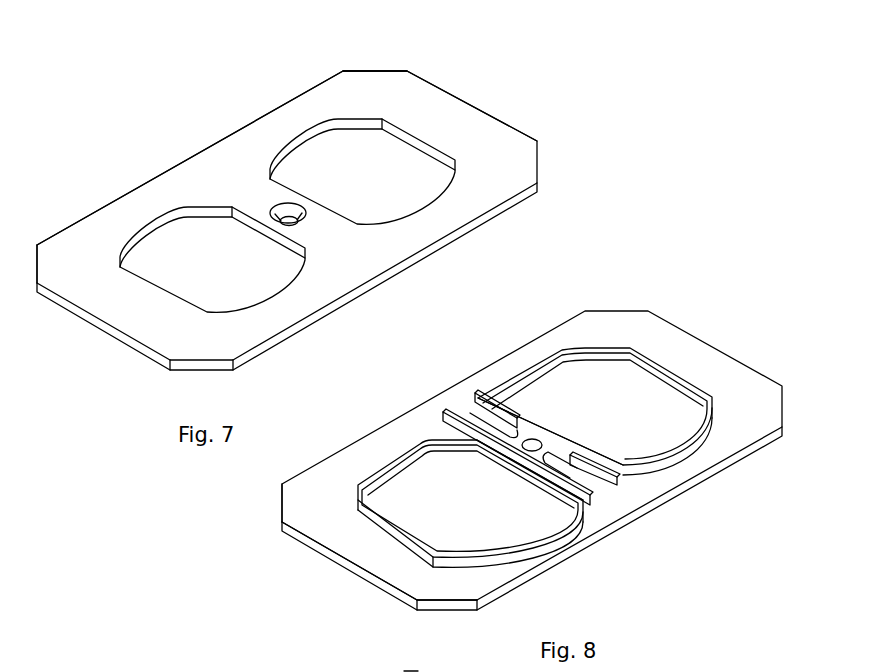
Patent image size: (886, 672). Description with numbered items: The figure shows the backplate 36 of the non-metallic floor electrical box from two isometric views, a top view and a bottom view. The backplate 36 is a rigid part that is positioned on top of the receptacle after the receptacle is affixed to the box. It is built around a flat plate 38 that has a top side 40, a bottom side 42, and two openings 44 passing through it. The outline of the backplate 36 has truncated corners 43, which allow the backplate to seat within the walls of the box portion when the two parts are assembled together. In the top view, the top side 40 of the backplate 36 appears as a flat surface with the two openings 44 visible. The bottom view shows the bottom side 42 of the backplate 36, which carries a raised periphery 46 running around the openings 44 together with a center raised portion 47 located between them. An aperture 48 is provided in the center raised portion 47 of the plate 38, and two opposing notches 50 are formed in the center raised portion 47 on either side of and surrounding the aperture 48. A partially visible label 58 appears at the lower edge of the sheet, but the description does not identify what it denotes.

In FIG. 7, the backplate 36 is at (143, 136).
In FIG. 8, the backplate 36 is at (690, 296).
In FIG. 7, the flat plate 38 is at (472, 105).
In FIG. 8, the flat plate 38 is at (718, 348).
In FIG. 7, the top side 40 is at (358, 261).
In FIG. 8, the bottom side 42 is at (468, 587).
In FIG. 7, the truncated corners 43 is at (374, 70).
In FIG. 8, the truncated corners 43 is at (281, 507).
In FIG. 7, the openings 44 is at (227, 273).
In FIG. 8, the openings 44 is at (627, 426).
In FIG. 8, the raised periphery 46 is at (678, 449).
In FIG. 8, the center raised portion 47 is at (533, 423).
In FIG. 7, the aperture 48 is at (290, 208).
In FIG. 8, the aperture 48 is at (528, 452).
In FIG. 8, the notches 50 is at (466, 414).
In FIG. 8, the gasket 58 is at (412, 668).